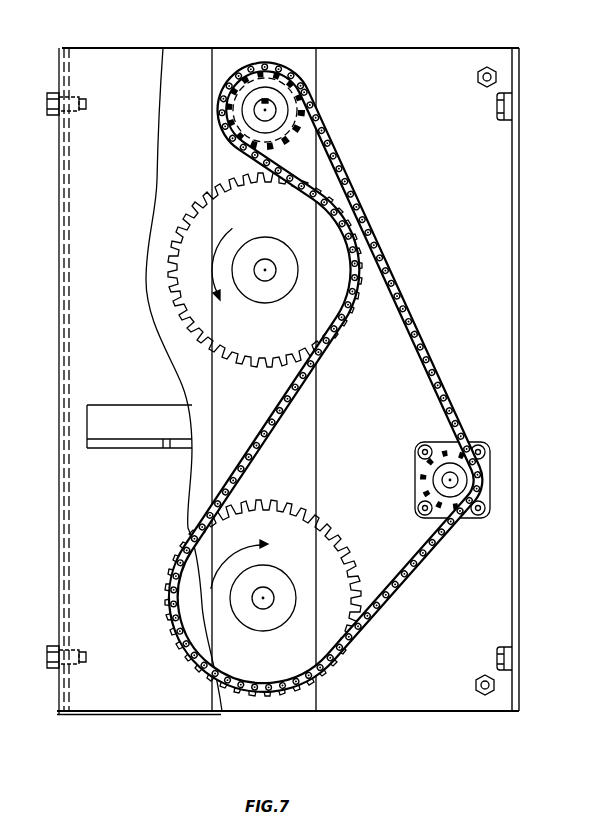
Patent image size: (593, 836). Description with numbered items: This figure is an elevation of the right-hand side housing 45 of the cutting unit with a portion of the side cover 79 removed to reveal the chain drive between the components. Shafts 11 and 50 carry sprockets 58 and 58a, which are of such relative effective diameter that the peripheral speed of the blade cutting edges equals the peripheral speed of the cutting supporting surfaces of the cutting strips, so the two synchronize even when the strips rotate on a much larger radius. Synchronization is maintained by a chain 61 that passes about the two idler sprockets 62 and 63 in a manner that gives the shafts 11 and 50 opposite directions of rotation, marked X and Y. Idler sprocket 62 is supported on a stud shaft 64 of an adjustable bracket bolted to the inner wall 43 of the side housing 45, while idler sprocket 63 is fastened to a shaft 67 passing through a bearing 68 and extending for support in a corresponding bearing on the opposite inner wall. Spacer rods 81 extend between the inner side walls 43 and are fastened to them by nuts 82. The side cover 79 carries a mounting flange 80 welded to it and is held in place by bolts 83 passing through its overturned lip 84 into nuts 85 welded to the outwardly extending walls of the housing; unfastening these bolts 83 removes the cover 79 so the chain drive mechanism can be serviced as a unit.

The shaft 11 is at (267, 270).
The inner wall 43 is at (320, 66).
The side housing 45 is at (90, 46).
The shaft 50 is at (268, 596).
The sprocket 58 is at (214, 347).
The sprocket 58a is at (343, 546).
The chain 61 is at (283, 404).
The idler sprocket 62 is at (276, 150).
The idler sprocket 63 is at (424, 464).
The stud shaft 64 is at (270, 108).
The shaft 67 is at (444, 480).
The bearing 68 is at (420, 496).
The side cover 79 is at (81, 514).
The mounting flange 80 is at (128, 449).
The rod 81 is at (486, 66).
The nut 82 is at (490, 68).
The bolt 83 is at (52, 91).
The overturned lip 84 is at (58, 290).
The nut 85 is at (68, 114).